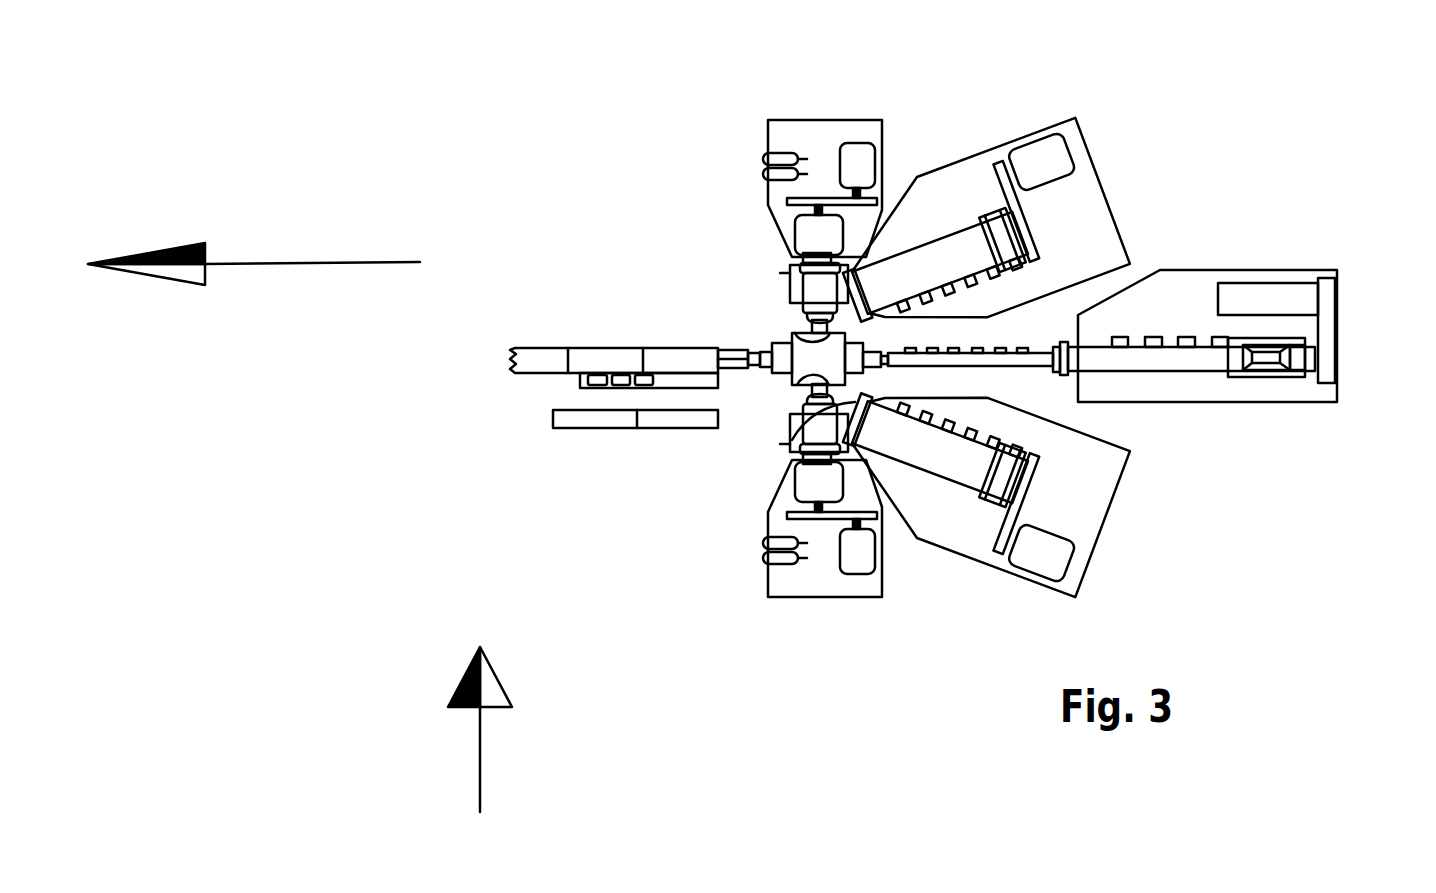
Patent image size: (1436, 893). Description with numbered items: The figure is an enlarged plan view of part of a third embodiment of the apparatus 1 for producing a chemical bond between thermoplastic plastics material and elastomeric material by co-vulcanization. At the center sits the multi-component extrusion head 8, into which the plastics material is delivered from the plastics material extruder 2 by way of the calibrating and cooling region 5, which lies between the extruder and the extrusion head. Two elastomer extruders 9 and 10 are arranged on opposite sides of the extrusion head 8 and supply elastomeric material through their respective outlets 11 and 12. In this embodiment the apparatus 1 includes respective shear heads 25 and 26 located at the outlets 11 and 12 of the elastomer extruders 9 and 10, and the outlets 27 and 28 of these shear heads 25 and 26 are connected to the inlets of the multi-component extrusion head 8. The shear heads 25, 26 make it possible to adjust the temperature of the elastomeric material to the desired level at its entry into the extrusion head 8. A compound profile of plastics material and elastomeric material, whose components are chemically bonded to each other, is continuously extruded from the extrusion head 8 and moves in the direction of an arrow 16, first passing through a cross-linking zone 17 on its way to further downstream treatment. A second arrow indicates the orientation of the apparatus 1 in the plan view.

The apparatus 1 is at (477, 745).
The plastics material extruder 2 is at (1348, 330).
The calibrating and cooling region 5 is at (988, 350).
The multi-component extrusion head 8 is at (757, 348).
The elastomer extruder 9 is at (1096, 140).
The elastomer extruder 10 is at (1108, 539).
The outlet of elastomer extruder 11 is at (789, 318).
The outlet of elastomer extruder 12 is at (790, 432).
The arrow 16 is at (265, 263).
The cross-linking zone 17 is at (562, 374).
The shear head 25 is at (862, 118).
The shear head 26 is at (852, 601).
The outlet of shear head 27 is at (800, 336).
The outlet of shear head 28 is at (792, 385).